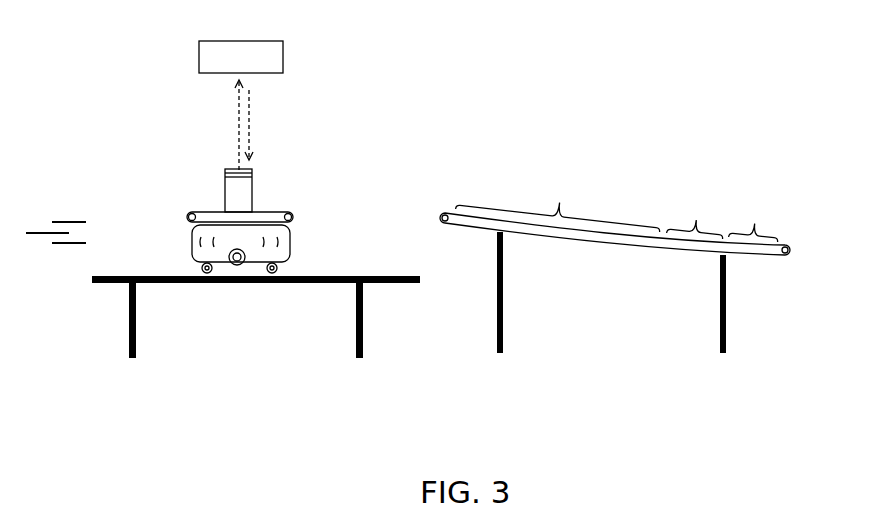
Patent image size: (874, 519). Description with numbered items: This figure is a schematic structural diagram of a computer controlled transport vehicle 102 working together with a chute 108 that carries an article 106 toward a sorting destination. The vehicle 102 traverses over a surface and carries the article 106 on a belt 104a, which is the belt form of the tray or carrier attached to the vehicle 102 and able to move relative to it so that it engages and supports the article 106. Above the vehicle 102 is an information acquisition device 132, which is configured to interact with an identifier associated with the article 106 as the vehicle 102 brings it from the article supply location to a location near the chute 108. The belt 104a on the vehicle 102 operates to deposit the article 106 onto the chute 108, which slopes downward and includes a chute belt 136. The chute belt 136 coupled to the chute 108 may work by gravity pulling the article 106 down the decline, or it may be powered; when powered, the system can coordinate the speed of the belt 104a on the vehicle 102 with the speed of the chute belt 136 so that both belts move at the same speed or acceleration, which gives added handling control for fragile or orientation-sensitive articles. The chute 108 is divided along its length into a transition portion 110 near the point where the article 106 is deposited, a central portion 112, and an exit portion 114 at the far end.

The computer controlled transport vehicle 102 is at (192, 248).
The belt 104a is at (272, 212).
The article 106 is at (224, 185).
The chute 108 is at (748, 256).
The transition portion 110 is at (558, 202).
The central portion 112 is at (695, 212).
The exit portion 114 is at (754, 214).
The information acquisition device 132 is at (199, 56).
The chute belt 136 is at (780, 247).